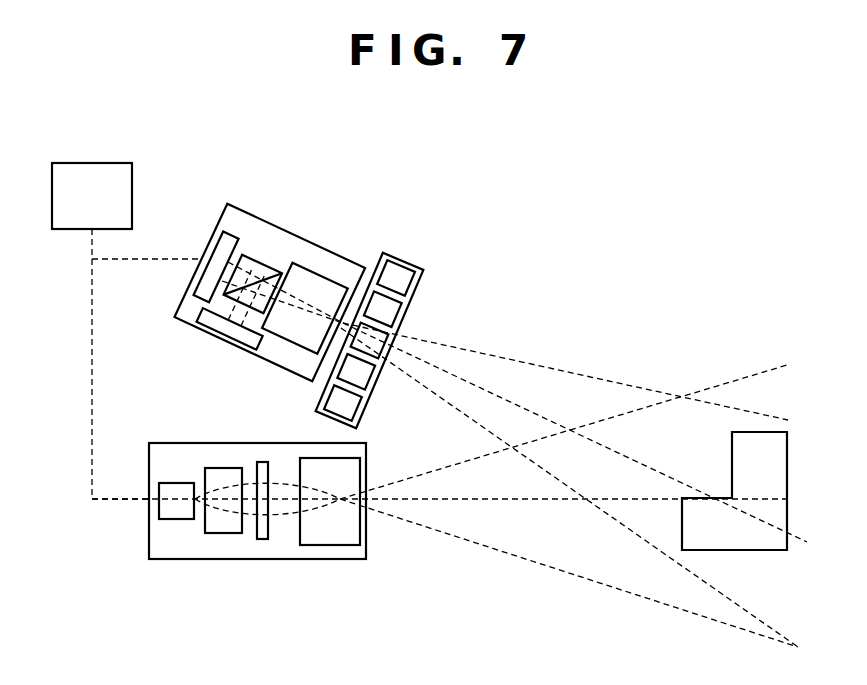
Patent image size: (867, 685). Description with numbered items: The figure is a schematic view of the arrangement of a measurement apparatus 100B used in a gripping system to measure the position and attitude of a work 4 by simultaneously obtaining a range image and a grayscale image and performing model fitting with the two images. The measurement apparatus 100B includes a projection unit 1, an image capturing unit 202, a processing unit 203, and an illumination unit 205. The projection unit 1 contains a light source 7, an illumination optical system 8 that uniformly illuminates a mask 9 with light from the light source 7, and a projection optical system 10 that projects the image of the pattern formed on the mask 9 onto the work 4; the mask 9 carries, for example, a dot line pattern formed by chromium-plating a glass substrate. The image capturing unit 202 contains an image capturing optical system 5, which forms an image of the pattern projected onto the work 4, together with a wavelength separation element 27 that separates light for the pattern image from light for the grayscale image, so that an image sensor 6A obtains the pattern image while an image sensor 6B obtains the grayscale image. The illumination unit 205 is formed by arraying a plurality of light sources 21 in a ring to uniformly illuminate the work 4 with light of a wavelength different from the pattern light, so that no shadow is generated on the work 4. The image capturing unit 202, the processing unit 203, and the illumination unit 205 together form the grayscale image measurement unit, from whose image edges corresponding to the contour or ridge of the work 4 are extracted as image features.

The measurement apparatus 100B is at (610, 246).
The processing unit 203 is at (72, 231).
The image capturing unit 202 is at (193, 328).
The image sensor 6A is at (232, 233).
The image sensor 6B is at (239, 351).
The wavelength separation element 27 is at (258, 262).
The image capturing optical system 5 is at (312, 268).
The illumination unit 205 is at (405, 331).
The light sources 21 is at (410, 292).
The work 4 is at (788, 465).
The projection unit 1 is at (190, 443).
The light source 7 is at (180, 520).
The illumination optical system 8 is at (224, 534).
The mask 9 is at (263, 540).
The projection optical system 10 is at (333, 546).